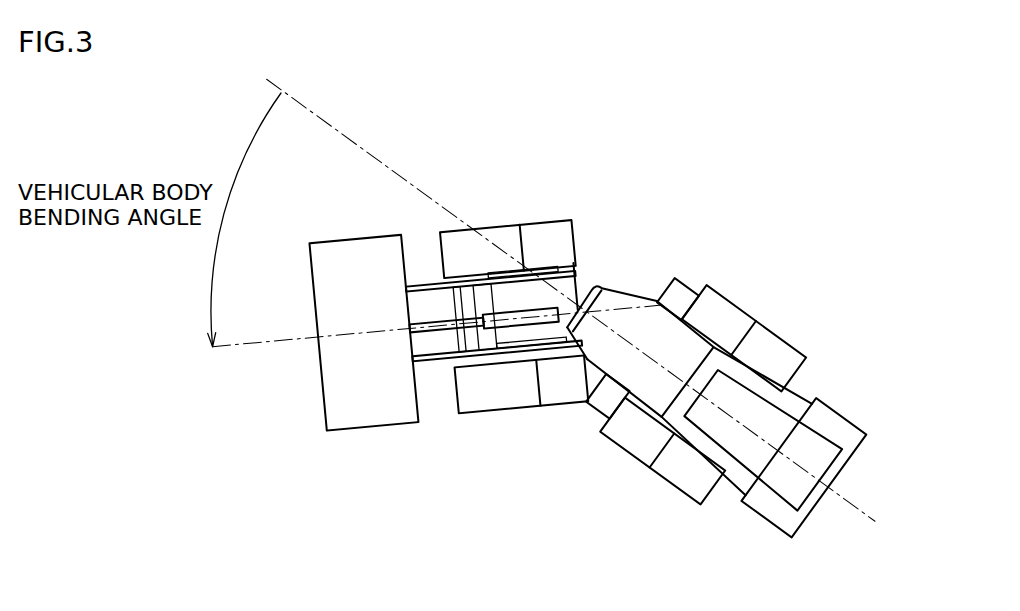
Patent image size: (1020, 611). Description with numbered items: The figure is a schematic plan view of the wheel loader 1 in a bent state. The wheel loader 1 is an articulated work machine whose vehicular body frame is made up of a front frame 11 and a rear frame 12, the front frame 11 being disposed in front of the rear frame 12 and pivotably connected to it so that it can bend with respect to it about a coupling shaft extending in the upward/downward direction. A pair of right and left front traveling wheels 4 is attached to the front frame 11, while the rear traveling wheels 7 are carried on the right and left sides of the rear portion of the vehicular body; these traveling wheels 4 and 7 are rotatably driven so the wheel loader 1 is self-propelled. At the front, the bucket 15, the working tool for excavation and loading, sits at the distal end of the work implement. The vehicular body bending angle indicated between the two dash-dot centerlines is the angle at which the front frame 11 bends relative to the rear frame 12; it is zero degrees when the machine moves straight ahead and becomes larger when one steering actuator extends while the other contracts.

The wheel loader 1 is at (706, 196).
The traveling wheels (front wheels) 4 is at (512, 232).
The traveling wheels 7 is at (782, 352).
The front frame 11 is at (582, 285).
The rear frame 12 is at (640, 308).
The bucket 15 is at (379, 412).